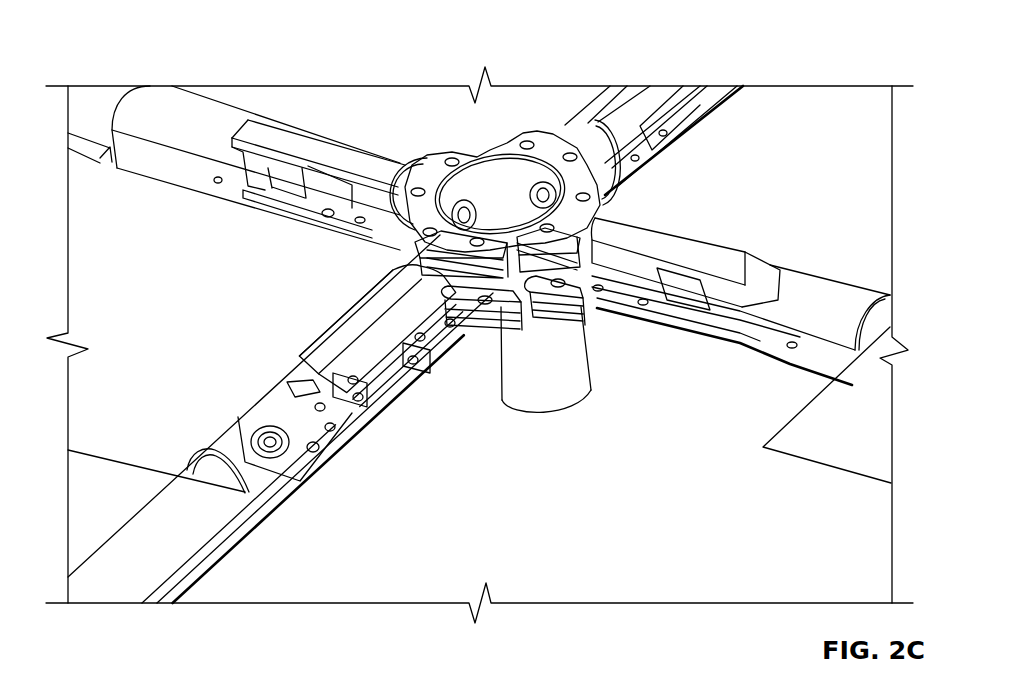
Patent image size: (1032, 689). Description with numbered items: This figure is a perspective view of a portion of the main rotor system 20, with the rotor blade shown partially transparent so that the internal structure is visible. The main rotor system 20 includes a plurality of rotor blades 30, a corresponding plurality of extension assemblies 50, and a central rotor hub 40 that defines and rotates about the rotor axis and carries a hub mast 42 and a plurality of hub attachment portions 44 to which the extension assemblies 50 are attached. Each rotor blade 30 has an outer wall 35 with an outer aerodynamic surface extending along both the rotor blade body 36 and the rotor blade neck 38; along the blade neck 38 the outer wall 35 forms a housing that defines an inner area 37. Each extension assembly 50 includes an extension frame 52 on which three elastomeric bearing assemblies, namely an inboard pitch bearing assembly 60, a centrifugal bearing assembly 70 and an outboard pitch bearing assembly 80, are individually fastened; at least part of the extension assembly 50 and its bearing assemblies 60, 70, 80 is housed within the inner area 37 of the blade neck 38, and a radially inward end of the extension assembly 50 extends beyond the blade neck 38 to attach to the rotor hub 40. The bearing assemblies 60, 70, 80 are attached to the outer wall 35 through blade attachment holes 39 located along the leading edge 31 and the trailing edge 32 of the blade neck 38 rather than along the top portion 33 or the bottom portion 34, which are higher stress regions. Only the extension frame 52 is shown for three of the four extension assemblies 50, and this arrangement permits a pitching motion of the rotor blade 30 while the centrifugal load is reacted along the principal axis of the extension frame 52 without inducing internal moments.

The main rotor system 20 is at (97, 42).
The rotor blade 30 is at (142, 450).
The leading edge 31 is at (788, 282).
The trailing edge 32 is at (280, 383).
The top portion 33 is at (838, 292).
The bottom portion 34 is at (378, 404).
The outer wall 35 is at (150, 167).
The rotor blade body 36 is at (257, 500).
The inner area 37 is at (395, 210).
The rotor blade neck 38 is at (283, 503).
The blade attachment holes 39 is at (790, 340).
The central rotor hub 40 is at (596, 340).
The hub mast 42 is at (589, 372).
The hub attachment portions 44 is at (597, 135).
The extension assembly 50 is at (336, 136).
The extension frame 52 is at (340, 328).
The inboard pitch bearing assembly 60 is at (420, 352).
The centrifugal bearing assembly 70 is at (345, 433).
The outboard pitch bearing assembly 80 is at (251, 395).